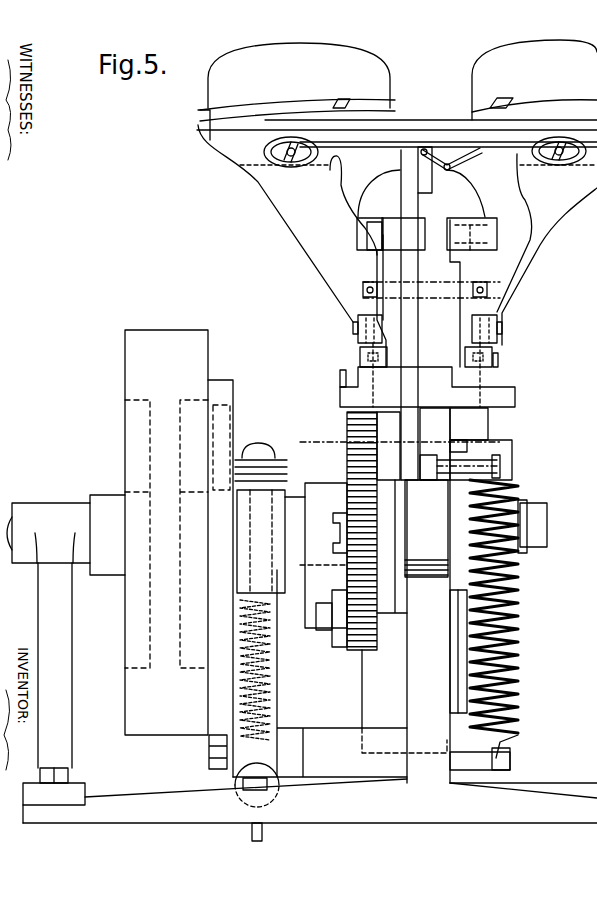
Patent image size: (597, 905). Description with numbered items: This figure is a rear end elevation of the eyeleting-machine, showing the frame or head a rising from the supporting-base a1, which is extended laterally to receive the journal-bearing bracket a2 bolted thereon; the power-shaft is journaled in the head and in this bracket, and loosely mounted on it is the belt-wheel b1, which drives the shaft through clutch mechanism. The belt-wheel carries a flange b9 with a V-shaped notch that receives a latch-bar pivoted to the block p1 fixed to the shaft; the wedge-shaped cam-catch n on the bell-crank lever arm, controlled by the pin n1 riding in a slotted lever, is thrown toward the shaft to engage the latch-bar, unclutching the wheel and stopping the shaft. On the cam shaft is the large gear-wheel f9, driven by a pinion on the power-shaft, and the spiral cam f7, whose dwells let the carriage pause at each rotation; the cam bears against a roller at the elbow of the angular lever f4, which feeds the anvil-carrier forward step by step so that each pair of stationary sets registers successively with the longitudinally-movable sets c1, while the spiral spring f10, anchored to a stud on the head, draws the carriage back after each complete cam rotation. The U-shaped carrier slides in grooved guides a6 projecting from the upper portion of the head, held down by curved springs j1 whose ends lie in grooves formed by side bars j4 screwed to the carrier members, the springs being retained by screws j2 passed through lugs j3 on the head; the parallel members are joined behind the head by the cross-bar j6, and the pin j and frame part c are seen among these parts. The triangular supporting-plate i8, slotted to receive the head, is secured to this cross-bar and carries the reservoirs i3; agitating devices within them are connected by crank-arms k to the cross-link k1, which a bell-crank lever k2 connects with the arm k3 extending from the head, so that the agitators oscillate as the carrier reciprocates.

The reservoir i3 is at (397, 90).
The triangular supporting-plate i8 is at (425, 124).
The crank-arm k is at (297, 163).
The cross-link k1 is at (353, 205).
The bell-crank lever k2 is at (476, 230).
The arm k3 is at (425, 187).
The lever f4 is at (420, 315).
The cross-bar j6 is at (431, 316).
The screw j2 is at (493, 310).
The lug j3 is at (358, 320).
The spring j1 is at (360, 350).
The pin j is at (500, 362).
The side bar j4 is at (352, 382).
The grooved guide a6 is at (477, 387).
The longitudinally-movable die or set c1 is at (480, 418).
The gear-wheel f9 is at (347, 426).
The block p1 is at (272, 480).
The cam f7 is at (388, 520).
The spiral spring f10 is at (523, 617).
The cam-catch n is at (315, 618).
The pin n1 is at (310, 613).
The frame c is at (372, 676).
The frame or head a is at (407, 690).
The supporting-base a1 is at (310, 802).
The journal-bearing bracket a2 is at (58, 673).
The belt-wheel b1 is at (167, 330).
The flange b9 is at (227, 561).